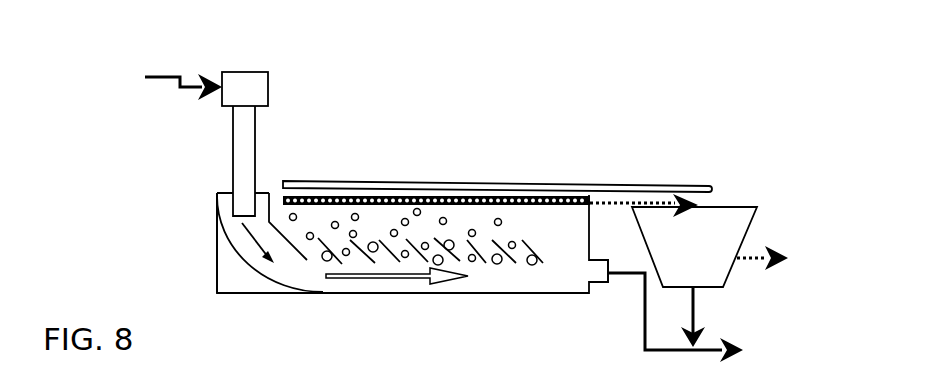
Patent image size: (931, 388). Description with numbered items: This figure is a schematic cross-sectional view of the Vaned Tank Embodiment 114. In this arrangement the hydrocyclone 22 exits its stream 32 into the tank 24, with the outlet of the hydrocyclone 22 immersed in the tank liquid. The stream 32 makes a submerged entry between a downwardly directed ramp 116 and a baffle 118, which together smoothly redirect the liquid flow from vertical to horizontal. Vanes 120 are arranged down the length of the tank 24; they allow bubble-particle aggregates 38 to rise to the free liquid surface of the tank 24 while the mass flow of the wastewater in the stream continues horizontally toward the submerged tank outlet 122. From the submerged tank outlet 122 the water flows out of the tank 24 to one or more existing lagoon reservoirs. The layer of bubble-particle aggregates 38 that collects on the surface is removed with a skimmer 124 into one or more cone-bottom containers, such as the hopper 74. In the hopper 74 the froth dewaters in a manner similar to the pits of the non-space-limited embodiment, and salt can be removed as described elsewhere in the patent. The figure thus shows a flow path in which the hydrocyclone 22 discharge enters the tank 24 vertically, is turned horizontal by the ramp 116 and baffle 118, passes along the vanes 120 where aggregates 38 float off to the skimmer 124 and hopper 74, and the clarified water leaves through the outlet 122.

The Vaned Tank Embodiment 114 is at (106, 160).
The stream 32 is at (161, 76).
The hydrocyclone 22 is at (268, 86).
The tank 24 is at (217, 243).
The downwardly directed ramp 116 is at (266, 263).
The baffle 118 is at (299, 248).
The vanes 120 is at (428, 256).
The bubble-particle aggregates 38 is at (422, 206).
The skimmer 124 is at (480, 189).
The hopper 74 is at (750, 225).
The submerged tank outlet 122 is at (594, 284).